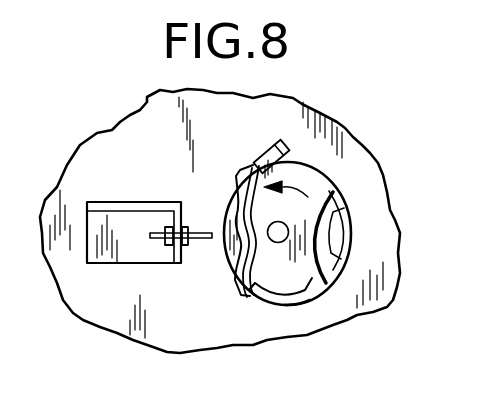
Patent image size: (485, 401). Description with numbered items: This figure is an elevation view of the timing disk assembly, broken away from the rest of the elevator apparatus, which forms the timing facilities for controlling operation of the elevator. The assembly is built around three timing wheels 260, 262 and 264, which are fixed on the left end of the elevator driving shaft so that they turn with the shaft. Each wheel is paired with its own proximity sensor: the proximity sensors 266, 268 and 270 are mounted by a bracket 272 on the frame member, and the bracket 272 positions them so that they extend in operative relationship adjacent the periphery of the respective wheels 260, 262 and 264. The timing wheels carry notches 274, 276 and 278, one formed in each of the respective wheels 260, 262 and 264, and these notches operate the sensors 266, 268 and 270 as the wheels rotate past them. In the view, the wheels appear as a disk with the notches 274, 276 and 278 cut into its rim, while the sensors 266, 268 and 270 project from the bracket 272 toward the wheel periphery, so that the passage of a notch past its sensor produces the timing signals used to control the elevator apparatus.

The timing wheel 260 is at (313, 180).
The timing wheel 262 is at (322, 230).
The timing wheel 264 is at (247, 253).
The proximity sensor 266 is at (198, 231).
The proximity sensor 268 is at (169, 236).
The proximity sensor 270 is at (185, 236).
The bracket 272 is at (122, 247).
The notch 274 is at (303, 290).
The notch 276 is at (333, 252).
The notch 278 is at (233, 250).